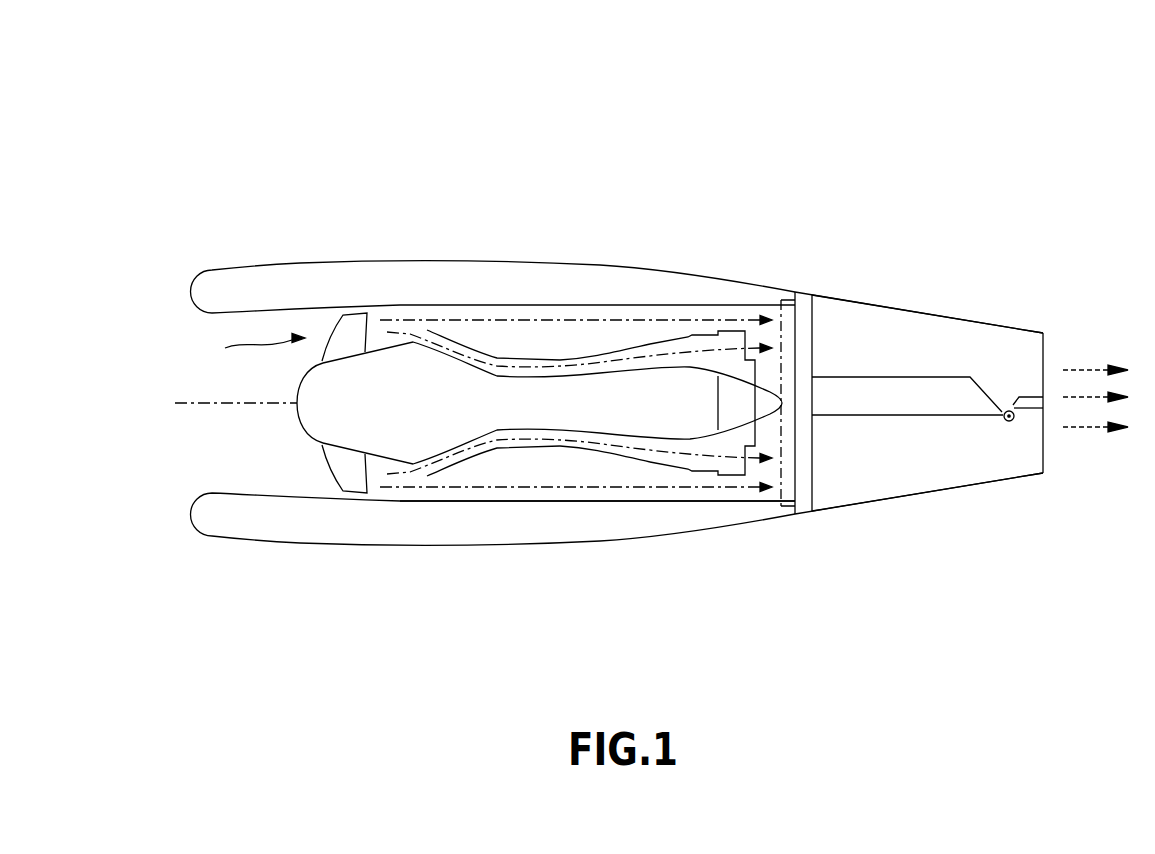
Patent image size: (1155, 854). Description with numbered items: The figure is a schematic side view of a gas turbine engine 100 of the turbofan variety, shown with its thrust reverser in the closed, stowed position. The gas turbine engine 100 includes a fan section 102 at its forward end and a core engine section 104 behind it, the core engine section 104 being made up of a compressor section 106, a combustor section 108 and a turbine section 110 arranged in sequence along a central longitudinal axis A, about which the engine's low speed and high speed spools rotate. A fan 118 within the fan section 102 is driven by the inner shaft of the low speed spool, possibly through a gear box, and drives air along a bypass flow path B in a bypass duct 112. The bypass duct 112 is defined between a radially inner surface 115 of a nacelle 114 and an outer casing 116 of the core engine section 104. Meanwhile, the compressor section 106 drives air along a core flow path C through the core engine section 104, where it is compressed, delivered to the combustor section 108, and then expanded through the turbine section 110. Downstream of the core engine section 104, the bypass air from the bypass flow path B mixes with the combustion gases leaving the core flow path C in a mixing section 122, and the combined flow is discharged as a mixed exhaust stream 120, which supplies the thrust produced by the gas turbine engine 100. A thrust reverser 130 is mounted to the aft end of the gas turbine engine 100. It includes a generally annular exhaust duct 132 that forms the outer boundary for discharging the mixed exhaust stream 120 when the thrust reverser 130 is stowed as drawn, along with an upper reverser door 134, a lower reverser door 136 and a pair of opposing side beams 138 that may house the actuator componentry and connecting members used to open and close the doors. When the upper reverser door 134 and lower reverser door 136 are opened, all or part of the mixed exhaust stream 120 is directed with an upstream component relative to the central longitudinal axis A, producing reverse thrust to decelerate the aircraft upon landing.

The gas turbine engine 100 is at (336, 103).
The fan section 102 is at (242, 348).
The core engine section 104 is at (454, 386).
The compressor section 106 is at (485, 340).
The combustor section 108 is at (592, 345).
The turbine section 110 is at (692, 318).
The bypass duct 112 is at (476, 491).
The nacelle 114 is at (312, 520).
The radially inner surface 115 is at (535, 500).
The outer casing 116 is at (594, 470).
The fan 118 is at (328, 463).
The mixed exhaust stream 120 is at (1088, 370).
The mixing section 122 is at (779, 292).
The thrust reverser 130 is at (906, 248).
The exhaust duct 132 is at (1035, 478).
The upper reverser door 134 is at (935, 308).
The lower reverser door 136 is at (883, 503).
The side beams 138 is at (847, 388).
The central longitudinal axis A is at (232, 403).
The bypass flow path B is at (418, 490).
The core flow path C is at (711, 458).